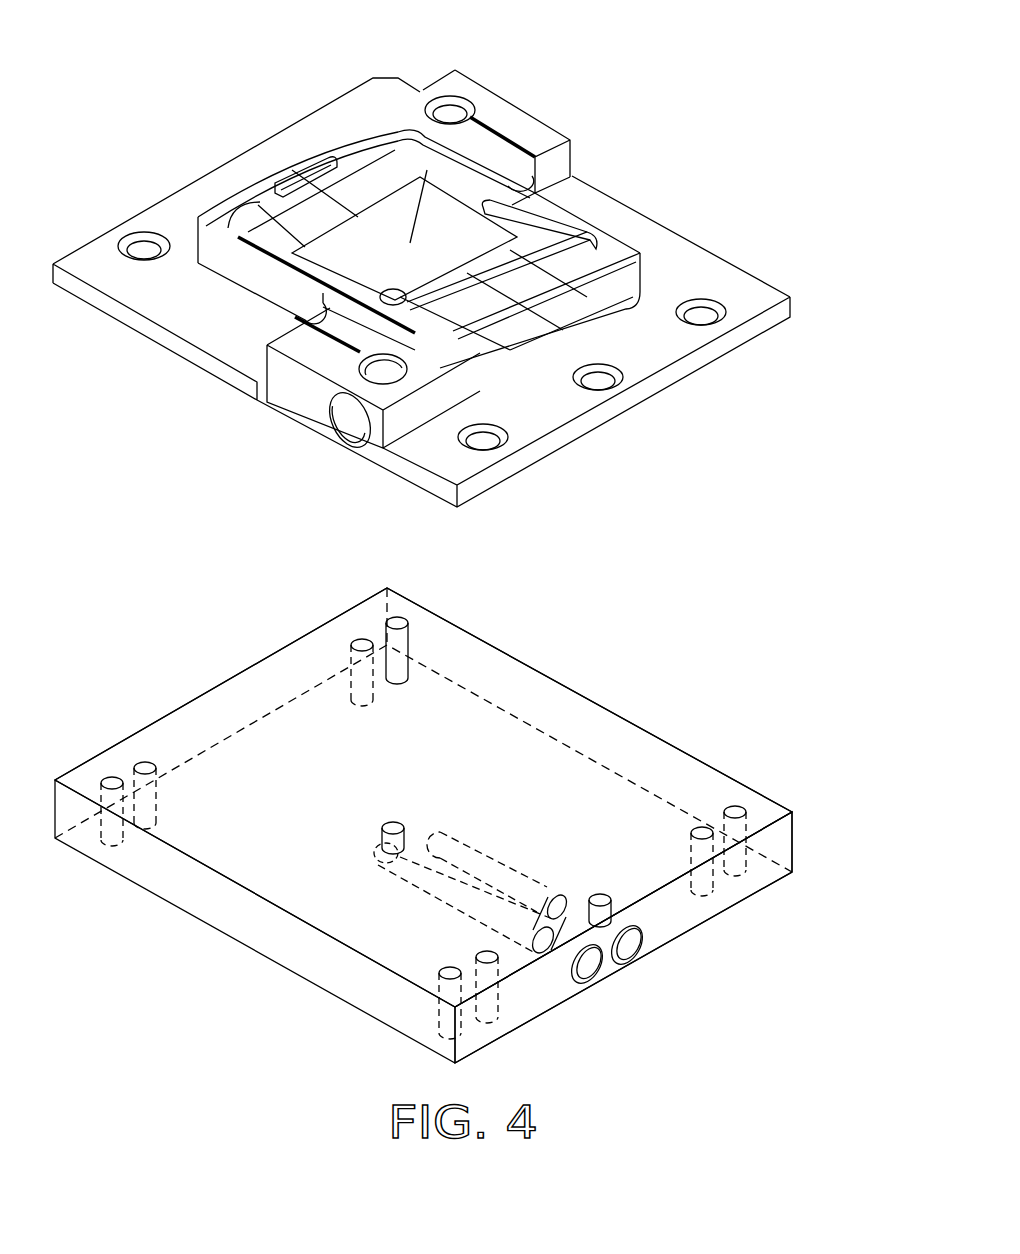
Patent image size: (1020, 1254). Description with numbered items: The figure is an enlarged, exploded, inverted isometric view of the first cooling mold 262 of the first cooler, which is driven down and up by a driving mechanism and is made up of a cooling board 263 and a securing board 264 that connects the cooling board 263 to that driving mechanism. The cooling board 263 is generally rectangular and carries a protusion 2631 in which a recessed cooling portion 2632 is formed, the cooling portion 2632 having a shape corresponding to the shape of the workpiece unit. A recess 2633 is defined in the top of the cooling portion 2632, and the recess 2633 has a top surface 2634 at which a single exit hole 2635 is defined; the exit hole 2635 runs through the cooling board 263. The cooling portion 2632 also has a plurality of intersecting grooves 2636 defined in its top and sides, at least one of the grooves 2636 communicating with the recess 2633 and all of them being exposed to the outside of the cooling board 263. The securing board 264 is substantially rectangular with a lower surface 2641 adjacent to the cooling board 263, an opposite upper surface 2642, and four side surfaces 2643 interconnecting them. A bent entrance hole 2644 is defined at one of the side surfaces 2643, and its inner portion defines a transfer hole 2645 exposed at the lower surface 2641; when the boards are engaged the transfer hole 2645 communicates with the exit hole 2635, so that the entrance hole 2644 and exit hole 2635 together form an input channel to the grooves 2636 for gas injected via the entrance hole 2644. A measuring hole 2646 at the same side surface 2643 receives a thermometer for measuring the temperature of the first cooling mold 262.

The first cooling mold 262 is at (420, 34).
The cooling board 263 is at (745, 252).
The protusion 2631 is at (600, 238).
The cooling portion 2632 is at (508, 338).
The recess 2633 is at (513, 217).
The top surface 2634 is at (393, 297).
The exit hole 2635 is at (490, 252).
The grooves 2636 is at (258, 193).
The securing board 264 is at (650, 714).
The lower surface 2641 is at (530, 692).
The upper surface 2642 is at (738, 905).
The side surfaces 2643 is at (785, 841).
The entrance hole 2644 is at (578, 972).
The transfer hole 2645 is at (385, 826).
The measuring hole 2646 is at (618, 952).